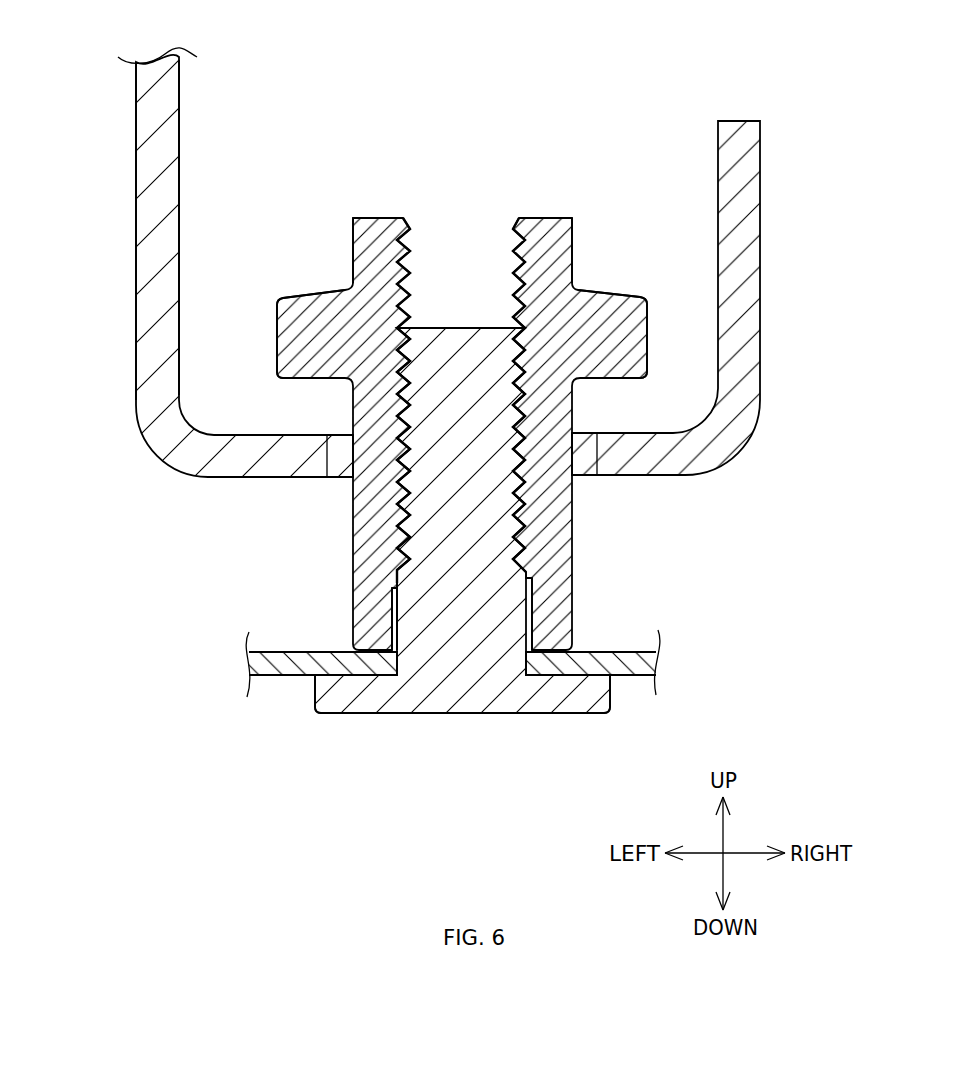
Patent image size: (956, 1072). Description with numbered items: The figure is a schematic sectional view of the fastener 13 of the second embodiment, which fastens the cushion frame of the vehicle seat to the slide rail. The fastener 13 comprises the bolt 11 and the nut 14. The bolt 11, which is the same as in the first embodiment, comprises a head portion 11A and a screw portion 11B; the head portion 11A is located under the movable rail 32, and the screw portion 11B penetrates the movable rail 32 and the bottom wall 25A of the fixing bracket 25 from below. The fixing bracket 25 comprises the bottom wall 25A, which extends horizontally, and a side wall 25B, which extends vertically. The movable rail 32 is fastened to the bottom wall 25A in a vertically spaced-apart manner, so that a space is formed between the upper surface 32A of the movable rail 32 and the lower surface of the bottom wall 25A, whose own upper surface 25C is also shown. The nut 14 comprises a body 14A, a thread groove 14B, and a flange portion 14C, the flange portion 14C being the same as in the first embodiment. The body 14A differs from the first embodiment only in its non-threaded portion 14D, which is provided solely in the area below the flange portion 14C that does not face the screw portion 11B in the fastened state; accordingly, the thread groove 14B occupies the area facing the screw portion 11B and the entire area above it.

The bolt 11 is at (455, 732).
The head portion 11A is at (367, 703).
The screw portion 11B is at (433, 598).
The fastener 13 is at (567, 100).
The nut 14 is at (373, 216).
The body 14A is at (555, 240).
The thread groove 14B is at (497, 228).
The flange portion 14C is at (615, 330).
The non-threaded portion 14D is at (535, 590).
The fixing bracket 25 is at (768, 218).
The bottom wall 25A is at (232, 462).
The side wall 25B is at (155, 162).
The upper surface 25C is at (303, 426).
The movable rail 32 is at (640, 665).
The upper surface 32A is at (605, 650).